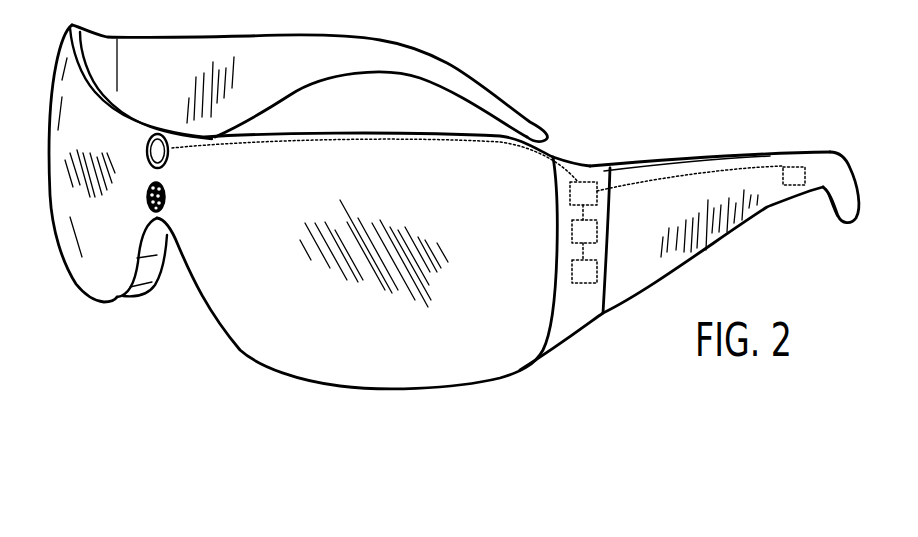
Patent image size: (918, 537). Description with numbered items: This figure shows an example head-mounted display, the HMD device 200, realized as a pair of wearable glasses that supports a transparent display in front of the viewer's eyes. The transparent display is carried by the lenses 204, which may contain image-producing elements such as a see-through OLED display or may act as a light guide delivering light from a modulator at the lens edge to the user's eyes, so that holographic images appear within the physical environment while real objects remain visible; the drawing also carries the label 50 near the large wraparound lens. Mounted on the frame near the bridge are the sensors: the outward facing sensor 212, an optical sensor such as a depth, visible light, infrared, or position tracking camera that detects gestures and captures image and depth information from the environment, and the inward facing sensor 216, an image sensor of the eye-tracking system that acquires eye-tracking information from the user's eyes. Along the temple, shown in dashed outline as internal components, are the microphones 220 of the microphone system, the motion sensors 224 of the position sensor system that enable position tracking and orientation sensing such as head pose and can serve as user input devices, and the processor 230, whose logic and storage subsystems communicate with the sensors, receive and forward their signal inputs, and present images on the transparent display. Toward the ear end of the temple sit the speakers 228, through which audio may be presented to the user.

The HMD device 200 is at (85, 341).
The lenses 204 is at (98, 270).
The lens 50 is at (250, 318).
The outward facing sensor 212 is at (175, 148).
The inward facing sensor 216 is at (170, 196).
The microphones 220 is at (588, 182).
The motion sensors 224 is at (597, 220).
The speakers 228 is at (797, 167).
The processor 230 is at (597, 260).